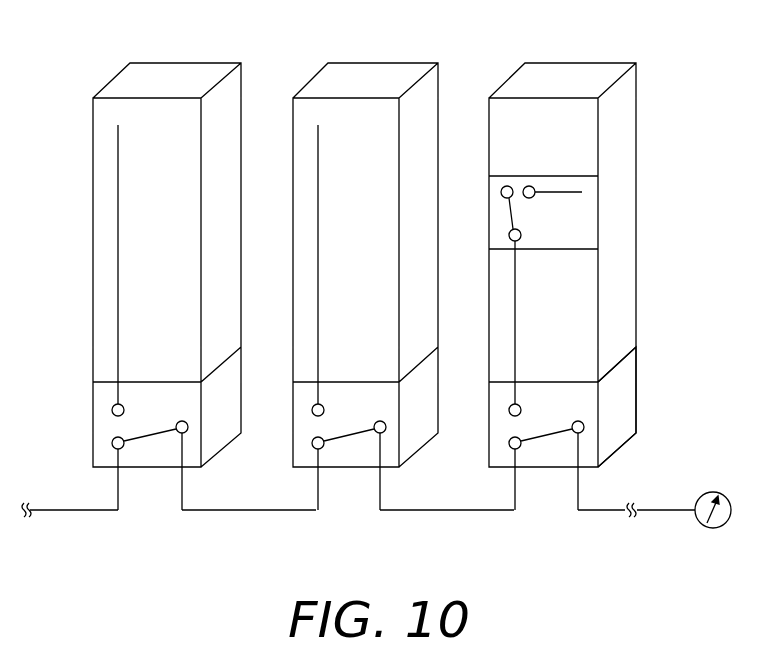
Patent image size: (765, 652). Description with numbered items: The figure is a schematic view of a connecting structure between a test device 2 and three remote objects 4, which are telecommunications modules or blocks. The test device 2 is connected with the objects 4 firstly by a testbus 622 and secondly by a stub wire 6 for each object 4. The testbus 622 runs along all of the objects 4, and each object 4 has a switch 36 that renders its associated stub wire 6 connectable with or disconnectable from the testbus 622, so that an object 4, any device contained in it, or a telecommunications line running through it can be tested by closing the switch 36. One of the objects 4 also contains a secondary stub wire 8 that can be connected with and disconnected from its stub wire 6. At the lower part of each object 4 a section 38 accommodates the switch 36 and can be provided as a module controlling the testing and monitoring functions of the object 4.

The test device 2 is at (722, 528).
The remote object 4 is at (166, 76).
The stub wire 6 is at (108, 353).
The secondary stub wire 8 is at (560, 188).
The switch 36 is at (150, 437).
The section 38 is at (622, 396).
The testbus 622 is at (452, 513).